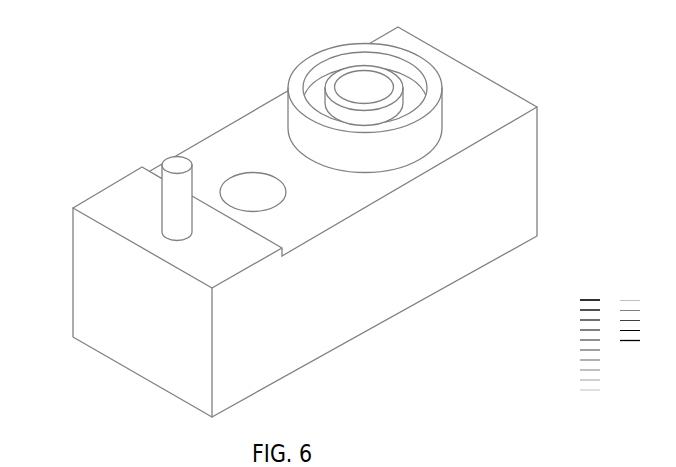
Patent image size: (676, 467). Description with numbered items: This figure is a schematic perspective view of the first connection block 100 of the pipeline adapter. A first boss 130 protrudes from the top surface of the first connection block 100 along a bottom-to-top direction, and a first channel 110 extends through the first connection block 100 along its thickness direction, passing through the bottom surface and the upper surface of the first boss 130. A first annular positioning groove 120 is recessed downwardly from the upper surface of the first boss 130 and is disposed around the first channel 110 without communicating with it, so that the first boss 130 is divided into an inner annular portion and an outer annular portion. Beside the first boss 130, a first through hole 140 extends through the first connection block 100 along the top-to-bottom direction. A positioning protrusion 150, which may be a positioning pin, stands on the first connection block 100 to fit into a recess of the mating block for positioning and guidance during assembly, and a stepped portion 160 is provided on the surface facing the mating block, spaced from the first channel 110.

The first connection block 100 is at (283, 208).
The first channel 110 is at (362, 88).
The first annular positioning groove 120 is at (315, 95).
The first boss 130 is at (432, 93).
The first through hole 140 is at (240, 183).
The positioning protrusion 150 is at (180, 197).
The stepped portion 160 is at (110, 208).